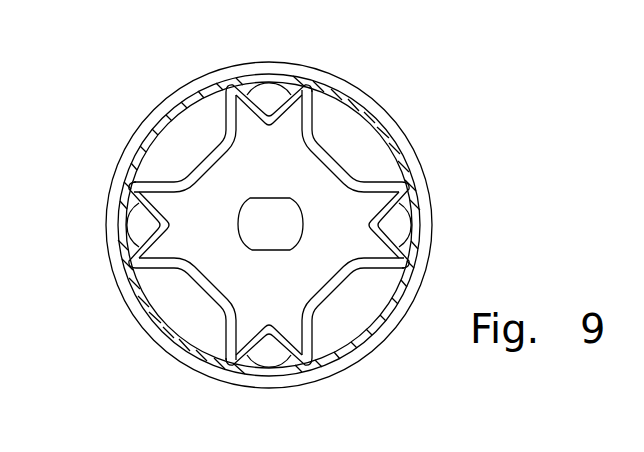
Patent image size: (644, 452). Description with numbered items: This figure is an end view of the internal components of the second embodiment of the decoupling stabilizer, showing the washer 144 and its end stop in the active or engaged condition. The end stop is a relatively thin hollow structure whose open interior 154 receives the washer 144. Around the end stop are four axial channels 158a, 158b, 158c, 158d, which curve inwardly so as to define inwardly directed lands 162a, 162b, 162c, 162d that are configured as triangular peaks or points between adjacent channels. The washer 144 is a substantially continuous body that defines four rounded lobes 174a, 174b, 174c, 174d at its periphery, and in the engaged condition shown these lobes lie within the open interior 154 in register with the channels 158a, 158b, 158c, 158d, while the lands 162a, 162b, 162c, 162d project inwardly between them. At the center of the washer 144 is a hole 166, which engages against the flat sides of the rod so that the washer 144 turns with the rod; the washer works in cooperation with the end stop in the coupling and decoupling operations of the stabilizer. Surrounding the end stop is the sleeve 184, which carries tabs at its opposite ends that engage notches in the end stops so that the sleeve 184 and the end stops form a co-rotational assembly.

The washer 144 is at (313, 268).
The open interior 154 is at (270, 230).
The axial channel 158a is at (388, 140).
The axial channel 158b is at (367, 340).
The axial channel 158c is at (163, 333).
The axial channel 158d is at (153, 127).
The land 162a is at (400, 211).
The land 162b is at (272, 330).
The land 162c is at (130, 223).
The land 162d is at (272, 112).
The hole 166 is at (253, 219).
The lobe 174a is at (245, 120).
The lobe 174b is at (400, 226).
The lobe 174c is at (326, 352).
The lobe 174d is at (142, 258).
The sleeve 184 is at (243, 64).